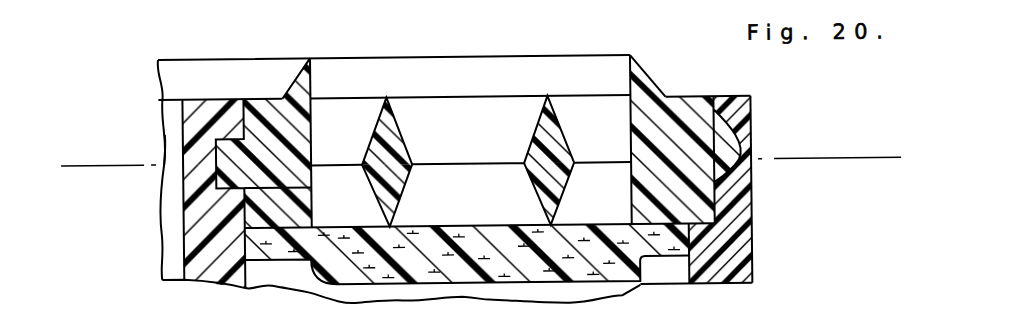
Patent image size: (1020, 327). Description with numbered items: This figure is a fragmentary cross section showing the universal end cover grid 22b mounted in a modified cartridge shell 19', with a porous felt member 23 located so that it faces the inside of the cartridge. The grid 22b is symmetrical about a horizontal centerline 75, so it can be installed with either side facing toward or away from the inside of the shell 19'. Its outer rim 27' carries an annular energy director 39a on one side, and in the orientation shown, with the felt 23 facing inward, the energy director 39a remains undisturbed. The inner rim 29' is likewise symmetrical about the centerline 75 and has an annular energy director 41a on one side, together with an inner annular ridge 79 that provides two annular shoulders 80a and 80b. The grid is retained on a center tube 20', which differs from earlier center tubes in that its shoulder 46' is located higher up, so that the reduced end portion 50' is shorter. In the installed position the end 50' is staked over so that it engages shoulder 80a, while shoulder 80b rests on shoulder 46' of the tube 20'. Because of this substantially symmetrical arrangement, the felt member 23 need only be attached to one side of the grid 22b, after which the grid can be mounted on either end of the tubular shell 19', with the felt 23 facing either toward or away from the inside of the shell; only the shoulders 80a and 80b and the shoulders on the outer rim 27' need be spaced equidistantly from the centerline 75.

The shell 19' is at (788, 189).
The center tube 20' is at (357, 276).
The end cover grid 22b is at (725, 207).
The porous felt member 23 is at (620, 300).
The outer rim 27' is at (695, 139).
The inner rim 29' is at (394, 61).
The annular energy director 39a is at (648, 80).
The annular energy director 41a is at (290, 75).
The shoulder 46' is at (333, 142).
The reduced end portion 50' is at (358, 168).
The horizontal centerline 75 is at (847, 165).
The inner annular ridge 79 is at (162, 148).
The annular shoulder 80a is at (183, 127).
The annular shoulder 80b is at (182, 219).